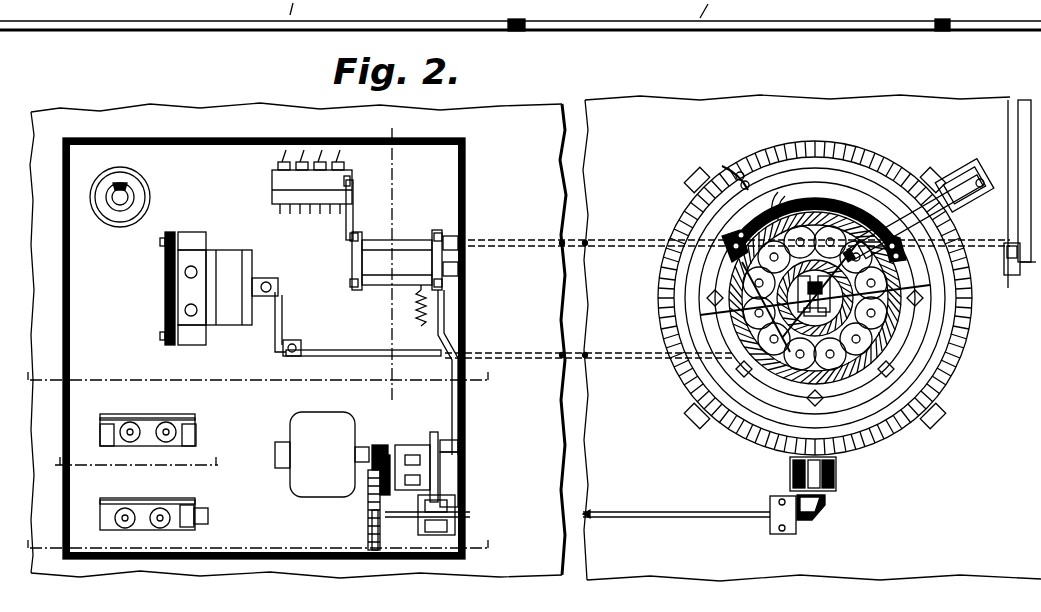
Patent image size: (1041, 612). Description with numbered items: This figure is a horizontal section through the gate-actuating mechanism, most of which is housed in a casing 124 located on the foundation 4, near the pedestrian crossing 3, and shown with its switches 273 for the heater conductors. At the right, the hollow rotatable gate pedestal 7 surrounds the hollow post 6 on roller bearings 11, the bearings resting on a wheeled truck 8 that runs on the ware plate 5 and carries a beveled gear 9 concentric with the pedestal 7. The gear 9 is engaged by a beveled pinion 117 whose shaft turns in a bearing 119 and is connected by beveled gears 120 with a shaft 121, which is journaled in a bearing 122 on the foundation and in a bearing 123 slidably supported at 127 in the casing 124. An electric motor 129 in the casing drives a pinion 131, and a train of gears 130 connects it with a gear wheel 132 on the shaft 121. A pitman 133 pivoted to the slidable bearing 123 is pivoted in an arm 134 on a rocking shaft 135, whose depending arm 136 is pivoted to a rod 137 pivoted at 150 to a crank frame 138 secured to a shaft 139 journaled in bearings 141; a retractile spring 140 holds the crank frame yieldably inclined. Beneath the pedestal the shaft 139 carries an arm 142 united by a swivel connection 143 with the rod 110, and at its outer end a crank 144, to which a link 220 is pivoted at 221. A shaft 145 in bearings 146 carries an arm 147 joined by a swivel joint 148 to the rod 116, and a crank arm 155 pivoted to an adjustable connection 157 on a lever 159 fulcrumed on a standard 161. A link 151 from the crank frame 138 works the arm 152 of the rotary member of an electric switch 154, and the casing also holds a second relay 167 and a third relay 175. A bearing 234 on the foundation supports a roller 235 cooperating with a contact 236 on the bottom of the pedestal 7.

The foundation 4 is at (113, 108).
The ware plate 5 is at (388, 255).
The crossing for pedestrians 3 is at (256, 547).
The hollow post 6 is at (790, 294).
The casing 124 is at (452, 136).
The switch 273 is at (104, 228).
The electric switch 154 is at (272, 177).
The arm 152 is at (347, 180).
The link 151 is at (352, 212).
The bearings 141 is at (356, 236).
The crank frame 138 is at (425, 252).
The retractile spring 140 is at (430, 268).
The shaft 139 is at (452, 236).
The pivot 150 is at (452, 268).
The rod 137 is at (445, 330).
The shaft 145 is at (342, 352).
The bearings 146 is at (292, 343).
The crank arm 155 is at (283, 315).
The adjustable connection 157 is at (266, 282).
The lever 159 is at (250, 262).
The standard 161 is at (226, 262).
The third relay 175 is at (206, 416).
The second relay 167 is at (205, 530).
The electric motor 129 is at (325, 418).
The pinion 131 is at (378, 444).
The train of gears 130 is at (368, 500).
The gear wheel 132 is at (368, 535).
The shaft 135 is at (418, 444).
The arm 134 is at (436, 432).
The depending arm 136 is at (458, 450).
The pitman 133 is at (440, 470).
The bearing 123 is at (440, 512).
The slidable mounting 127 is at (418, 535).
The rod 110 is at (690, 258).
The pedestal 7 is at (862, 195).
The beveled gear 9 is at (838, 185).
The contact 236 is at (790, 190).
The roller 235 is at (918, 185).
The bearing 234 is at (965, 170).
The wheeled truck 8 is at (975, 180).
The arm 142 is at (745, 262).
The arm 147 is at (850, 370).
The roller bearings 11 is at (888, 322).
The rod 116 is at (745, 305).
The swivel joint 148 is at (892, 272).
The swivel connection 143 is at (690, 412).
The beveled pinion 117 is at (870, 450).
The bearing 119 is at (792, 472).
The beveled gears 120 is at (822, 508).
The bearing 122 is at (770, 522).
The shaft 121 is at (676, 512).
The link 220 is at (1016, 108).
The crank 144 is at (1006, 262).
The pivot 221 is at (1030, 272).